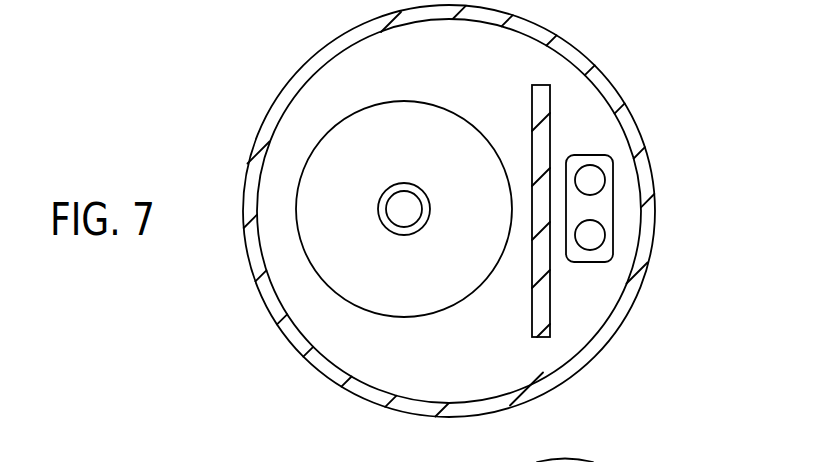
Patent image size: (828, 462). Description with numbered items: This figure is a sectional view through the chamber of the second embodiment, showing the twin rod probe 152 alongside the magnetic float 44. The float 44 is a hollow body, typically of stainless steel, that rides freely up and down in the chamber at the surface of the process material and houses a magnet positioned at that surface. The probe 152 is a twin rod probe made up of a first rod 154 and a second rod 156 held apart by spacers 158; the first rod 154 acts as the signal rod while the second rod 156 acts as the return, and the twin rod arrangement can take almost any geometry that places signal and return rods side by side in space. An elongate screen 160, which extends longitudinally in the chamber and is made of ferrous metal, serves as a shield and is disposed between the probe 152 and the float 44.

The float 44 is at (402, 318).
The probe 152 is at (643, 220).
The first rod 154 is at (590, 165).
The second rod 156 is at (590, 250).
The spacers 158 is at (605, 197).
The screen 160 is at (540, 337).